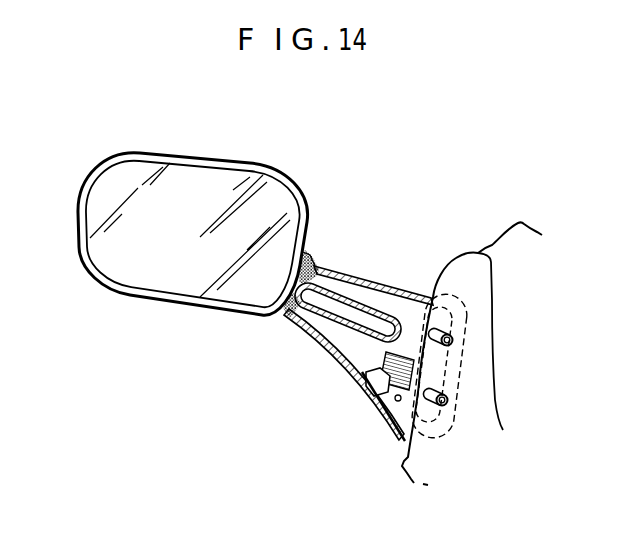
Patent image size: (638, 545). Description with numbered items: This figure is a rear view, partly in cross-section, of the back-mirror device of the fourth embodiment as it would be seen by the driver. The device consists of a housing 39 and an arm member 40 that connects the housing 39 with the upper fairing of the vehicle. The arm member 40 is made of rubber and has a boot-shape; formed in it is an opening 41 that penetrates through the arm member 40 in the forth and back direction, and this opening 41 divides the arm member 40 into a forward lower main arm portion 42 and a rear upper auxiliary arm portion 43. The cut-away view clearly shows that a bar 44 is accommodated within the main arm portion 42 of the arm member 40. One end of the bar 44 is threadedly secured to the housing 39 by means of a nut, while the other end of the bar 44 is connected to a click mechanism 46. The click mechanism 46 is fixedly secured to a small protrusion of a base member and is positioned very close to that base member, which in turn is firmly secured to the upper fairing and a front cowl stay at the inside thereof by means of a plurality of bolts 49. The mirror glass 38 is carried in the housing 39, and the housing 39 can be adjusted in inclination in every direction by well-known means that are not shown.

The mirror 38 is at (142, 173).
The housing 39 is at (278, 166).
The arm member 40 is at (308, 260).
The opening 41 is at (376, 339).
The main arm portion 42 is at (330, 360).
The auxiliary arm portion 43 is at (375, 279).
The bar 44 is at (356, 373).
The click mechanism 46 is at (382, 413).
The bolts 49 is at (453, 338).